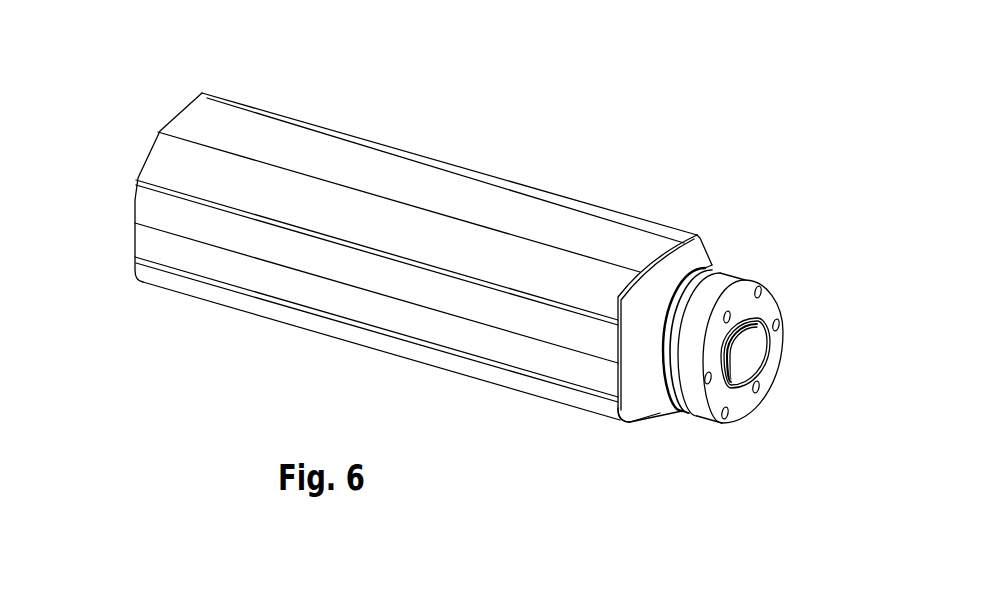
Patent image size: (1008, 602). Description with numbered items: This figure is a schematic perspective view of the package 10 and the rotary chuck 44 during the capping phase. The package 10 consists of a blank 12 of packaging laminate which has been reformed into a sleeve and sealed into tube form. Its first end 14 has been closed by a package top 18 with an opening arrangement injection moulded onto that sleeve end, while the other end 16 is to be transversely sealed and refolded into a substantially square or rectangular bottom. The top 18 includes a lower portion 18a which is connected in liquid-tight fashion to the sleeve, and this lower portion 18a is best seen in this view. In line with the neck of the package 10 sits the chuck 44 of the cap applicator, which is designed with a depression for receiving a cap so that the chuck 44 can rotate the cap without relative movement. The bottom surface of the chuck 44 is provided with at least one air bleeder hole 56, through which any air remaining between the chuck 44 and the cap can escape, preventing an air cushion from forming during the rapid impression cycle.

The package 10 is at (530, 160).
The blank 12 is at (277, 114).
The first end 14 is at (659, 258).
The other end 16 is at (150, 143).
The package top 18 is at (652, 427).
The lower portion 18a is at (627, 421).
The rotary chuck 44 is at (755, 303).
The air bleeder hole 56 is at (735, 355).